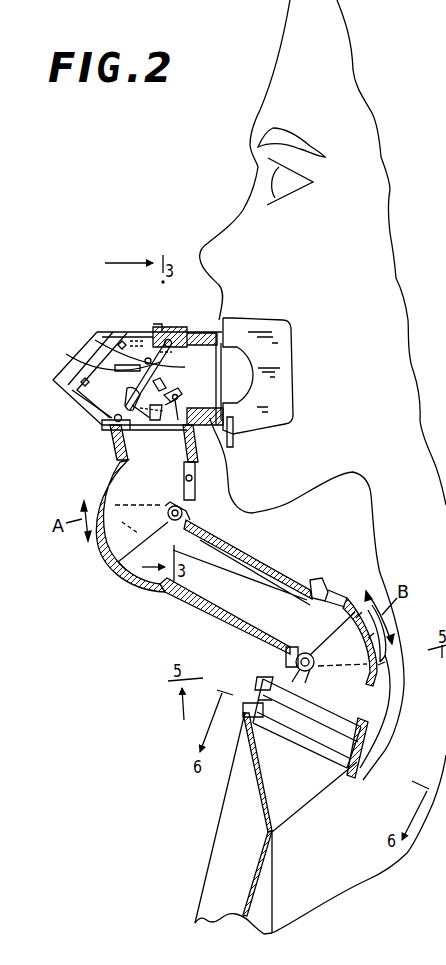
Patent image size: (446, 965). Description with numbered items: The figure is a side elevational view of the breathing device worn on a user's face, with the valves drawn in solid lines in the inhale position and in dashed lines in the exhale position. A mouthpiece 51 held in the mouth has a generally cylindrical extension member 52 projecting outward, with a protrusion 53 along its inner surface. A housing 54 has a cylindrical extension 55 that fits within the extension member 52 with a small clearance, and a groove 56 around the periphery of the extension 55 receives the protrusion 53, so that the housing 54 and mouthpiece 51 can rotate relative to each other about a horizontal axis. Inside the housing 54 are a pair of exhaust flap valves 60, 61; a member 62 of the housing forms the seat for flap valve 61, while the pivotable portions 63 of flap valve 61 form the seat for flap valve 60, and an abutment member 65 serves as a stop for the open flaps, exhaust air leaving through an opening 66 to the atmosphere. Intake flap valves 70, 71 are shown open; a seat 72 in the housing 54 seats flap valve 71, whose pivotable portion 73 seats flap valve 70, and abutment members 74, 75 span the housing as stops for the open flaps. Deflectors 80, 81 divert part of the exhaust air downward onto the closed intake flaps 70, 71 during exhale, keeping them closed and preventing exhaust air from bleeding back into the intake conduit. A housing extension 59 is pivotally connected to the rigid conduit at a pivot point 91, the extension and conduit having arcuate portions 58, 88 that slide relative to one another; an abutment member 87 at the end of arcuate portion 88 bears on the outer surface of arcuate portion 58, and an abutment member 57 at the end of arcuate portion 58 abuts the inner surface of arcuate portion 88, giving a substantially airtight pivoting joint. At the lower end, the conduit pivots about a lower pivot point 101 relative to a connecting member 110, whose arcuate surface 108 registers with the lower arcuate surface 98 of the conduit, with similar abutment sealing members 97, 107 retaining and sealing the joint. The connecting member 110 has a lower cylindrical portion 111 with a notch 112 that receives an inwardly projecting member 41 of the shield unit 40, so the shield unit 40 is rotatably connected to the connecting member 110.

The shield unit 40 is at (212, 841).
The inwardly projecting member 41 is at (245, 712).
The mouthpiece 51 is at (270, 323).
The cylindrical extension member 52 is at (205, 330).
The protrusion 53 is at (231, 443).
The housing 54 is at (68, 407).
The cylindrical extension of housing 55 is at (232, 410).
The groove 56 is at (238, 318).
The abutment member 57 is at (118, 575).
The arcuate portion 58 is at (98, 490).
The housing extension 59 is at (105, 478).
The exhaust flap valve 60 is at (165, 348).
The exhaust flap valve 61 is at (68, 355).
The seat member 62 is at (66, 392).
The pivotable portions 63 is at (178, 368).
The abutment member 65 is at (140, 363).
The opening 66 is at (95, 344).
The intake flap valve 70 is at (112, 437).
The intake flap valve 71 is at (173, 421).
The seat 72 is at (194, 450).
The pivotable portion 73 is at (139, 428).
The abutment member 74 is at (102, 425).
The abutment member 75 is at (156, 428).
The deflector 80 is at (113, 343).
The deflector 81 is at (182, 393).
The abutment member 87 is at (100, 525).
The arcuate portion 88 is at (123, 562).
The pivot point 91 is at (186, 511).
The abutment sealing member 97 is at (347, 599).
The lower arcuate surface 98 is at (360, 603).
The lower pivot point 101 is at (288, 655).
The abutment sealing member 107 is at (391, 668).
The arcuate surface 108 is at (372, 703).
The connecting member 110 is at (384, 729).
The lower cylindrical portion 111 is at (281, 720).
The notch 112 is at (253, 725).